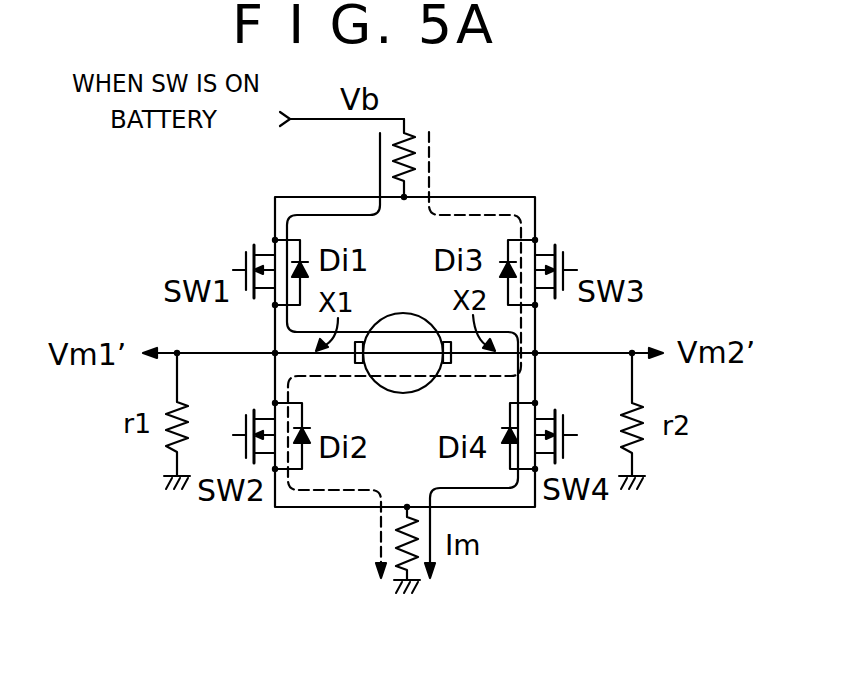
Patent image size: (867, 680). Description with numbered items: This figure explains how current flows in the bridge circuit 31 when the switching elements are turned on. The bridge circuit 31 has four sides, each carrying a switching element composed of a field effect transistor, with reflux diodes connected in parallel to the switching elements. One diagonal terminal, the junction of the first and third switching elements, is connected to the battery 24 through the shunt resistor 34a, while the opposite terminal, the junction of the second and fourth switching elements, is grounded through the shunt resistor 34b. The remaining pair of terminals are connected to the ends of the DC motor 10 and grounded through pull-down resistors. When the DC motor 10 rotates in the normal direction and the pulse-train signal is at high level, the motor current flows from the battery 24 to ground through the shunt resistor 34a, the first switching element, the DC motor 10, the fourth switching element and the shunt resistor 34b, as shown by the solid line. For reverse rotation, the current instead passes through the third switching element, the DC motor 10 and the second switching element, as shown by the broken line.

The DC motor 10 is at (392, 393).
The battery 24 is at (318, 119).
The bridge circuit 31 is at (507, 184).
The shunt resistor 34a is at (404, 260).
The shunt resistor 34b is at (337, 485).